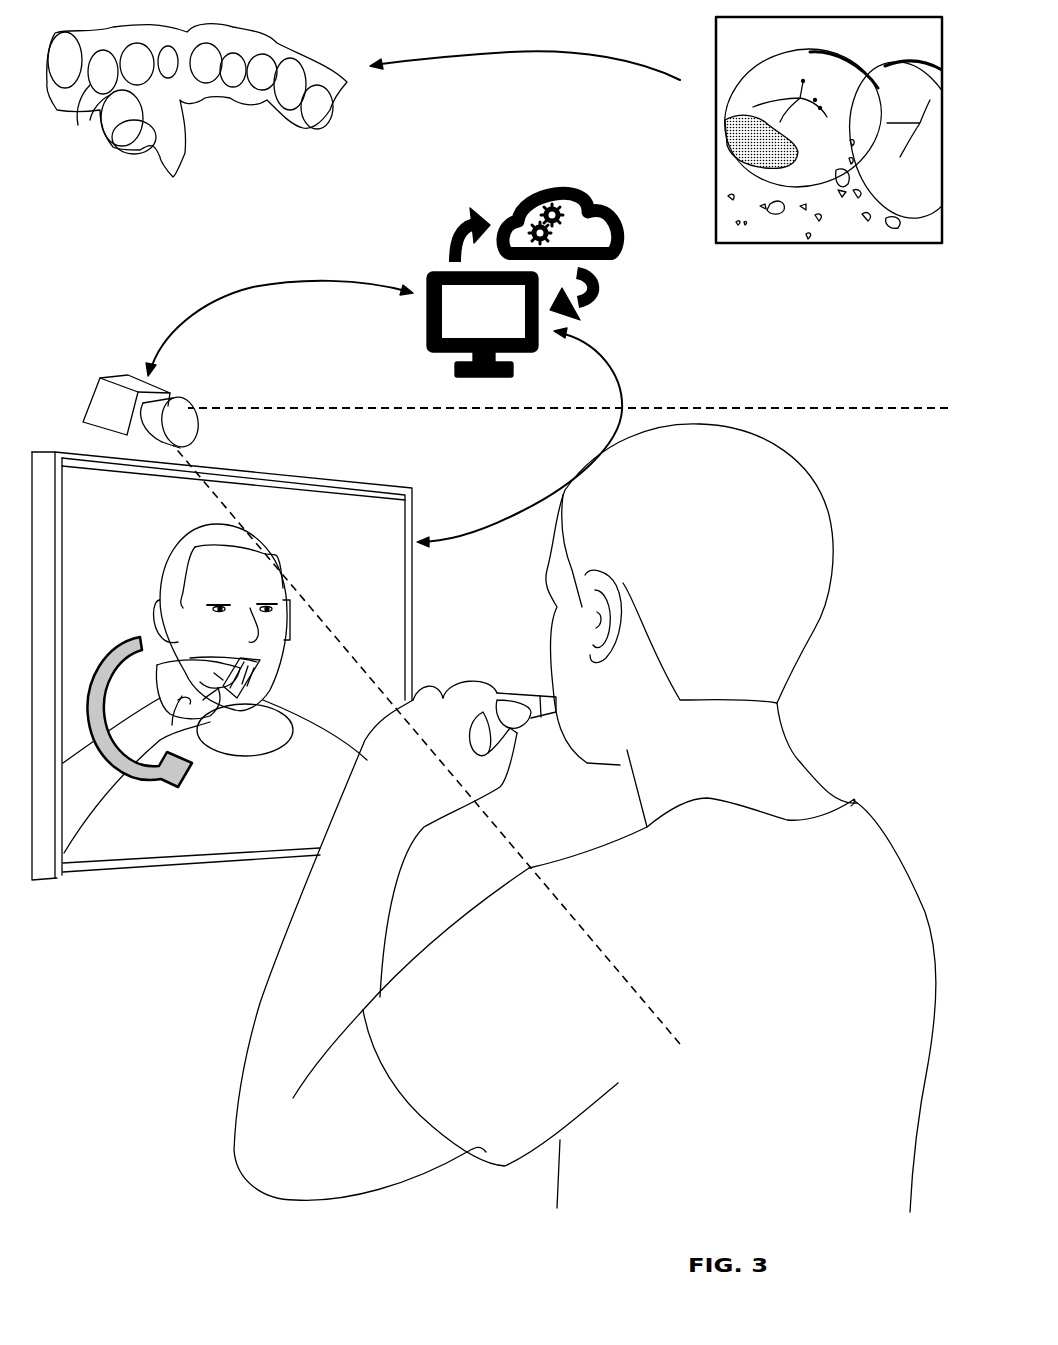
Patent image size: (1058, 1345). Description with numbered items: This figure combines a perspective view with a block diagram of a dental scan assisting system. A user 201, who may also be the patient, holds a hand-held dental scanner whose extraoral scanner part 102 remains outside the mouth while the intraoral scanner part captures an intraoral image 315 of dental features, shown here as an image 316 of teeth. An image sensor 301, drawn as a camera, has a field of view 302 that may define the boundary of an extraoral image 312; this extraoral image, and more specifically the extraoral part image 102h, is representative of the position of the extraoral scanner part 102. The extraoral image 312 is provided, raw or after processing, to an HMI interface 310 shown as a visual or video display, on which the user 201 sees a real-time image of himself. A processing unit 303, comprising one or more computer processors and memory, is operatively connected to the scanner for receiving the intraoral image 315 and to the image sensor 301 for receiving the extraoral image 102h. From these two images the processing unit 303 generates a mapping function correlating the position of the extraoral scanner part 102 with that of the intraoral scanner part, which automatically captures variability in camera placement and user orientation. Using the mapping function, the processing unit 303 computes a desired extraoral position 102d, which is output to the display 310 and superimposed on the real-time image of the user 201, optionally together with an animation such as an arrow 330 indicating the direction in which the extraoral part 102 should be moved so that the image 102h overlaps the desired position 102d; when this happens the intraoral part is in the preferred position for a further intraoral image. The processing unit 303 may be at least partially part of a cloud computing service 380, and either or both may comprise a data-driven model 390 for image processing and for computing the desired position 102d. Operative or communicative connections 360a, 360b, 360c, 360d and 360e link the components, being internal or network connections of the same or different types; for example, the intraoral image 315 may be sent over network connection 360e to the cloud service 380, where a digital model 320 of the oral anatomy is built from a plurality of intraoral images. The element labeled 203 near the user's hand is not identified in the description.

The extraoral scanner part 102 is at (528, 700).
The desired extraoral position 102d is at (233, 695).
The extraoral part image 102h is at (222, 673).
The user 201 is at (817, 652).
The hand 203 is at (488, 783).
The image sensor 301 is at (104, 390).
The field of view 302 is at (695, 408).
The processing unit 303 is at (504, 326).
The HMI interface 310 is at (62, 877).
The extraoral image 312 is at (109, 496).
The intraoral image 315 is at (814, 182).
The image of teeth 316 is at (807, 165).
The digital model 320 is at (205, 118).
The arrow 330 is at (140, 772).
The operative or communicative connection 360a is at (253, 288).
The operative or communicative connection 360b is at (600, 352).
The operative or communicative connection 360c is at (448, 228).
The operative or communicative connection 360d is at (593, 278).
The network connection 360e is at (510, 54).
The cloud computing service 380 is at (597, 203).
The data-driven model 390 is at (545, 207).